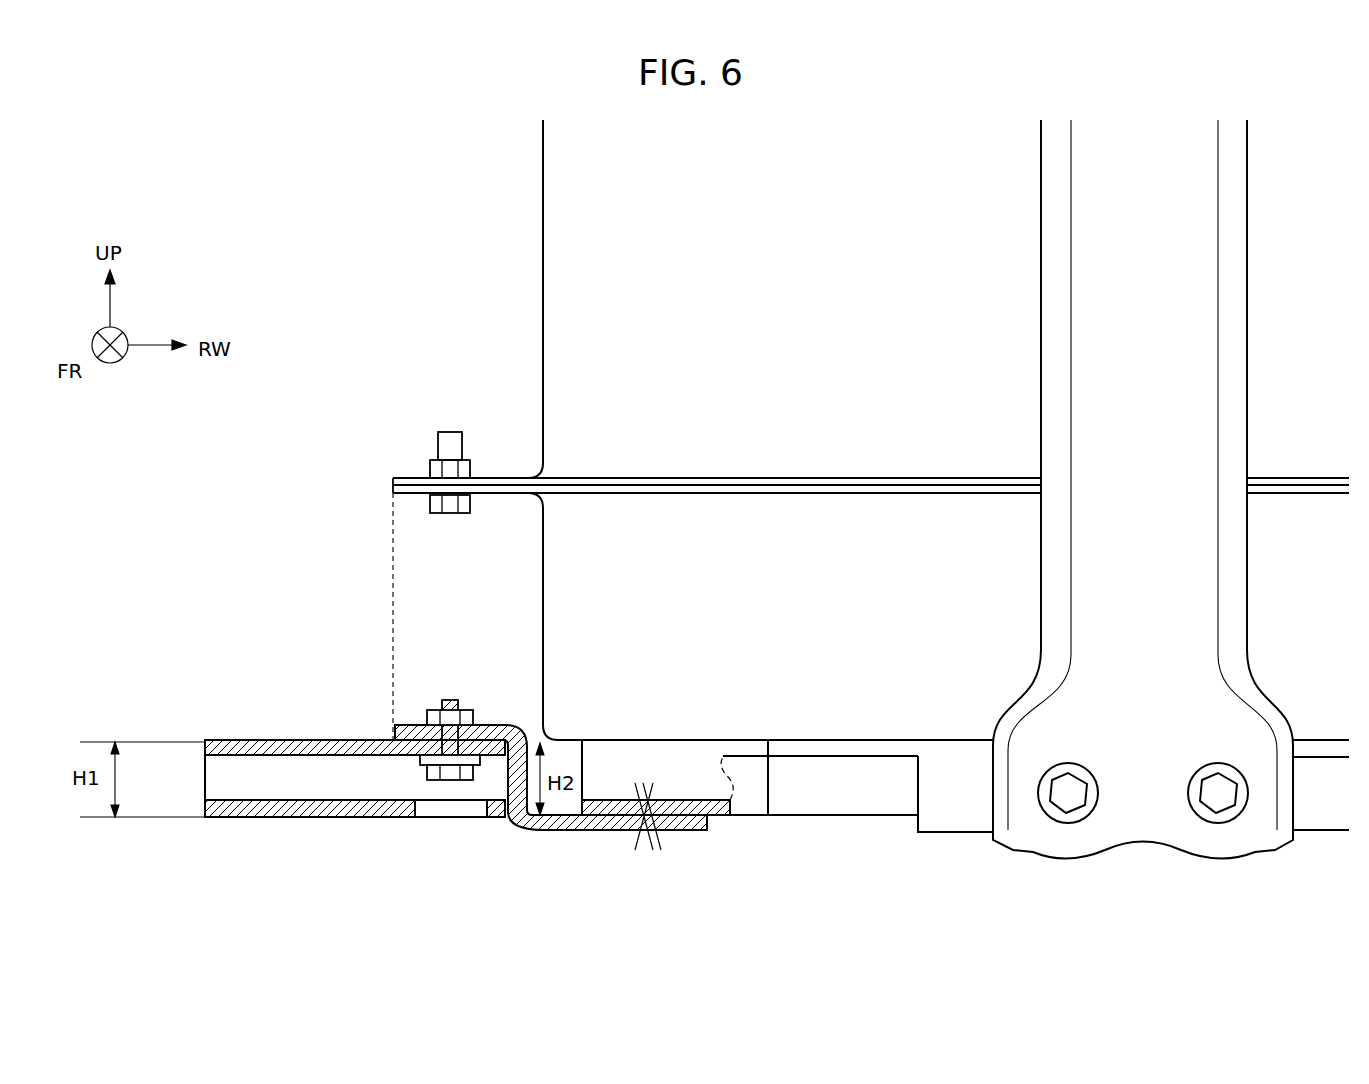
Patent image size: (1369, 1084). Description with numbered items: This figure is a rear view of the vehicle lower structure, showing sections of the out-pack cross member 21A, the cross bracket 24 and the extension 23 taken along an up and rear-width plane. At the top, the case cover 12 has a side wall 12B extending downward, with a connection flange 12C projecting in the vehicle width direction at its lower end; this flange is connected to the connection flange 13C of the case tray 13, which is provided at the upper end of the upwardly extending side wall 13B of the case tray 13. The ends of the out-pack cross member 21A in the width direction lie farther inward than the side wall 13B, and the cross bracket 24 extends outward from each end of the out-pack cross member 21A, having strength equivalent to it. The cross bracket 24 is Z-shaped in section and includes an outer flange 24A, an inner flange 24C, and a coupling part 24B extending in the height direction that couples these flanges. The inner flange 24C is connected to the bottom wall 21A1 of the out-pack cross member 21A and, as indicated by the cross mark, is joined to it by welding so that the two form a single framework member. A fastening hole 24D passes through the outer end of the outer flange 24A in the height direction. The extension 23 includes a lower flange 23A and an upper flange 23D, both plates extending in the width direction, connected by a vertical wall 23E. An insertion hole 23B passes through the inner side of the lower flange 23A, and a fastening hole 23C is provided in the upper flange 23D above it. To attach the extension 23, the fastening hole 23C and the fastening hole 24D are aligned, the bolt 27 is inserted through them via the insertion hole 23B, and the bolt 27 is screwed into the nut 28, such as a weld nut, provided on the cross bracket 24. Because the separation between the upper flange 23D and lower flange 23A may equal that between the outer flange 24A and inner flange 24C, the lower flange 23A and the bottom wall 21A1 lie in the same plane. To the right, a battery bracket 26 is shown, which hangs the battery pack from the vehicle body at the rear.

The case cover 12 is at (833, 306).
The side wall 12B is at (833, 306).
The connection flange 12C is at (412, 475).
The case tray 13 is at (871, 586).
The side wall 13B is at (871, 586).
The connection flange 13C is at (407, 498).
The out-pack cross member 21A is at (749, 820).
The bottom wall 21A1 is at (679, 804).
The extension 23 is at (324, 823).
The lower flange 23A is at (320, 817).
The insertion hole 23B is at (422, 812).
The fastening hole 23C is at (395, 748).
The upper flange 23D is at (272, 745).
The vertical wall 23E is at (212, 790).
The cross bracket 24 is at (551, 781).
The outer flange 24A is at (497, 726).
The coupling part 24B is at (520, 826).
The inner flange 24C is at (580, 832).
The fastening hole 24D is at (485, 722).
The battery bracket 26 is at (1143, 838).
The bolt 27 is at (447, 780).
The nut 28 is at (449, 744).